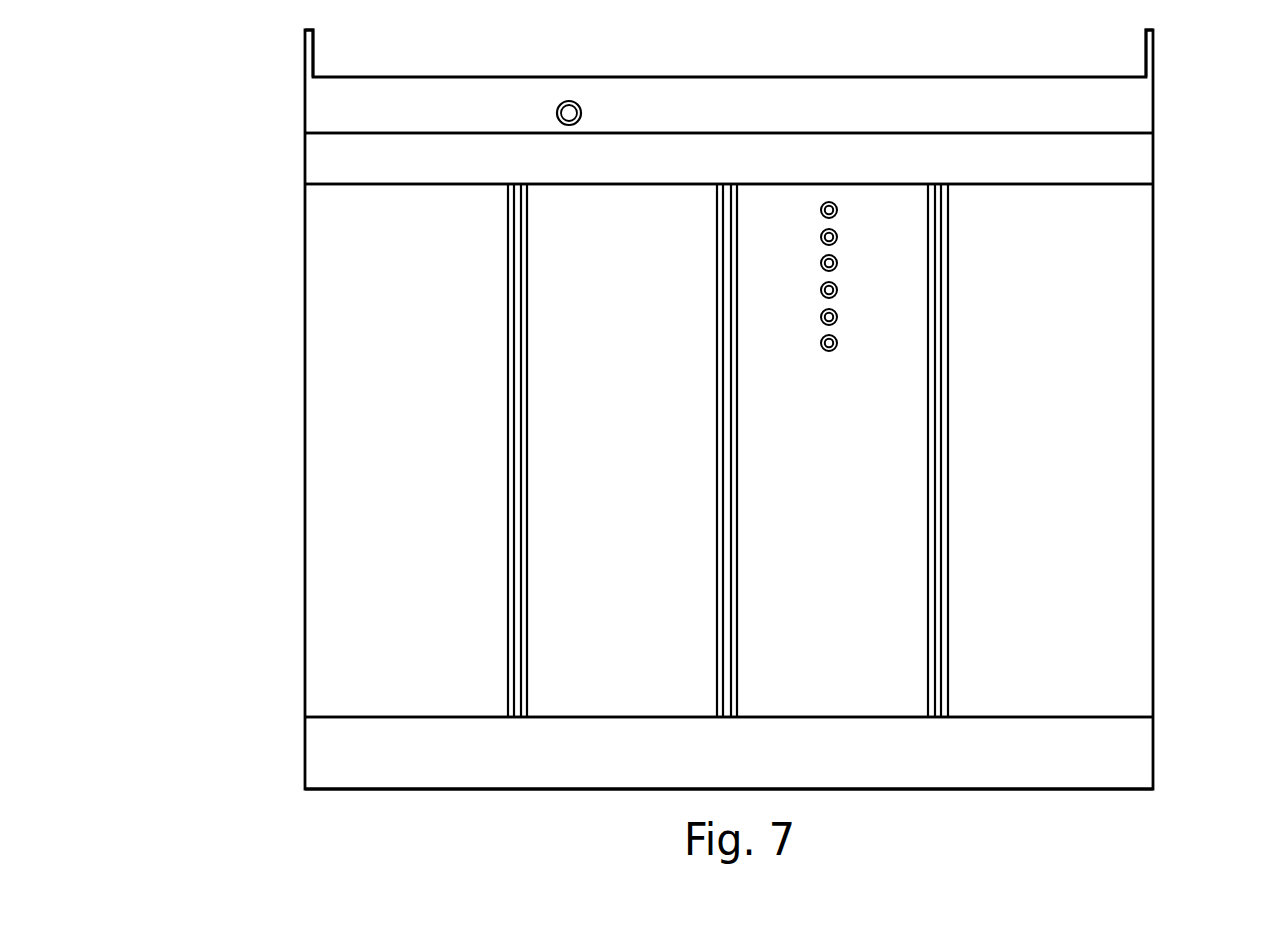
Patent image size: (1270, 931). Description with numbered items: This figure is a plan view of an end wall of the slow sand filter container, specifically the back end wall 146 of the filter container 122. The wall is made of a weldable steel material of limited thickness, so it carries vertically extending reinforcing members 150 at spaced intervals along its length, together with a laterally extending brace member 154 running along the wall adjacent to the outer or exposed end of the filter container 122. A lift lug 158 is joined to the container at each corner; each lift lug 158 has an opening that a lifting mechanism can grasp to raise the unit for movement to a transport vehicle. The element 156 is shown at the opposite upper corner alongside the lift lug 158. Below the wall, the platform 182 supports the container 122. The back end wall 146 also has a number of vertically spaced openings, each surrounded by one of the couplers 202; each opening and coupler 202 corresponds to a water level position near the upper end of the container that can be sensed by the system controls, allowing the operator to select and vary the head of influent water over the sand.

The filter container 122 is at (1153, 247).
The back end wall 146 is at (1107, 574).
The vertically extending reinforcing members 150 is at (718, 448).
The laterally extending brace member 154 is at (645, 168).
The right mounting tab 156 is at (1155, 52).
The lift lug 158 is at (305, 46).
The platform 182 is at (506, 766).
The couplers 202 is at (822, 294).